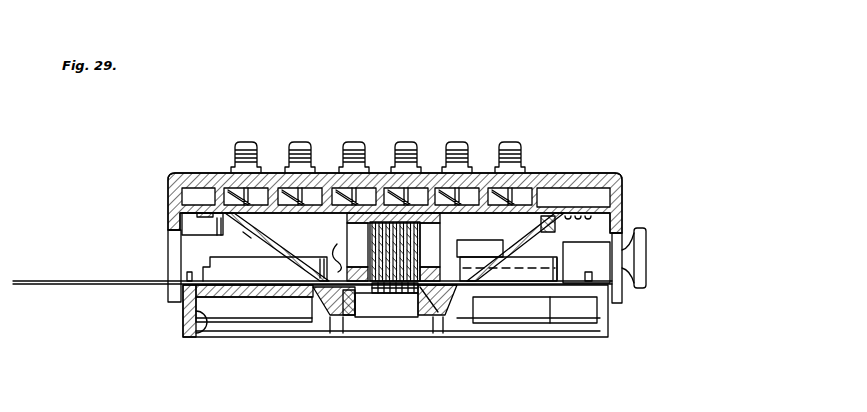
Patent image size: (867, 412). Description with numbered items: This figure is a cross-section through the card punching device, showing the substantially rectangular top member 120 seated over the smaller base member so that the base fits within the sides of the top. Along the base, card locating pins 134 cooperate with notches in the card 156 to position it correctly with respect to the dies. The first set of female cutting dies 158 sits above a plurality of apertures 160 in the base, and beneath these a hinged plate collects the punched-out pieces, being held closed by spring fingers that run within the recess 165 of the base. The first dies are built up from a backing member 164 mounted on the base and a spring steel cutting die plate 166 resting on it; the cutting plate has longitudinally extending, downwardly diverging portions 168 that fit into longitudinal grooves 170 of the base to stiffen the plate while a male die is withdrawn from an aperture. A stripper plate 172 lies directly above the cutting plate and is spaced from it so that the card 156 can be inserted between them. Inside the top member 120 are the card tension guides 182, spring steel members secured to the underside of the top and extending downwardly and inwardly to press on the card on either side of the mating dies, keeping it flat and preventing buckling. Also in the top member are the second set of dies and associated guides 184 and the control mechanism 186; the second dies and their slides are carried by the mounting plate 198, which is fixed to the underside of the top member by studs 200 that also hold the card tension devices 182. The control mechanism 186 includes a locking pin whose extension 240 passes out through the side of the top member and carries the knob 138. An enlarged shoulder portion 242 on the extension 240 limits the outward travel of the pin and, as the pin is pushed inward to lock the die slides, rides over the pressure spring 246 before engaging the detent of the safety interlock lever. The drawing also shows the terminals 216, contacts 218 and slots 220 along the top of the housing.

The top member 120 is at (628, 195).
The card locating pins 134 is at (188, 273).
The knob 138 is at (648, 259).
The card 156 is at (124, 279).
The first set of female cutting dies 158 is at (386, 302).
The apertures 160 is at (430, 310).
The backing member 164 is at (428, 295).
The recess 165 is at (205, 325).
The spring steel cutting die plate 166 is at (357, 289).
The downwardly diverging portions 168 is at (335, 294).
The longitudinal grooves 170 is at (347, 290).
The stripper plate 172 is at (323, 254).
The card tension guides 182 is at (246, 237).
The second set of dies and associated guides 184 is at (446, 232).
The control mechanism 186 is at (548, 242).
The mounting plate 198 is at (266, 247).
The studs 200 is at (215, 222).
The terminal 216 is at (258, 148).
The contact clip 218 is at (232, 190).
The slot 220 is at (196, 197).
The extension 240 is at (586, 262).
The enlarged shoulder portion 242 is at (507, 260).
The pressure spring 246 is at (525, 235).